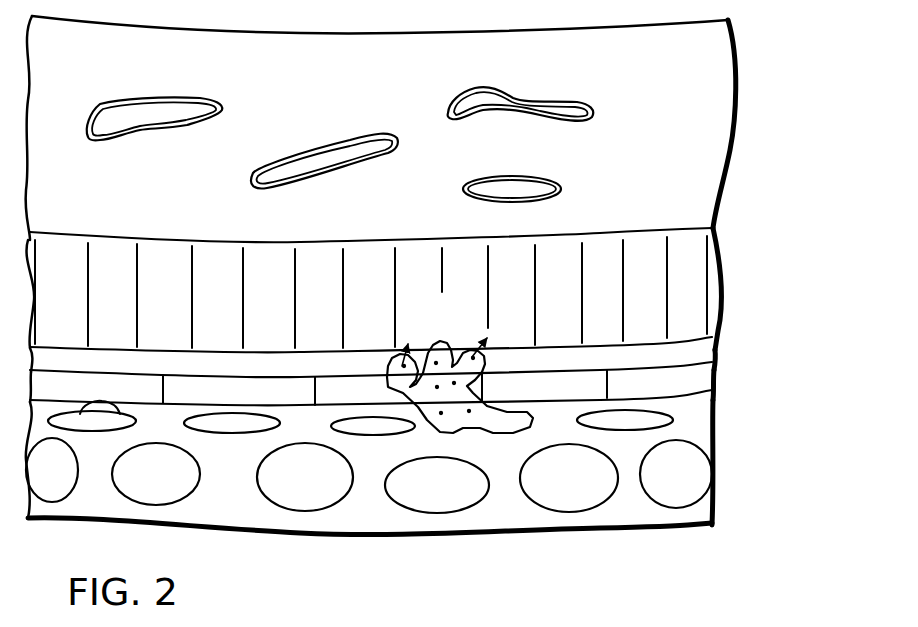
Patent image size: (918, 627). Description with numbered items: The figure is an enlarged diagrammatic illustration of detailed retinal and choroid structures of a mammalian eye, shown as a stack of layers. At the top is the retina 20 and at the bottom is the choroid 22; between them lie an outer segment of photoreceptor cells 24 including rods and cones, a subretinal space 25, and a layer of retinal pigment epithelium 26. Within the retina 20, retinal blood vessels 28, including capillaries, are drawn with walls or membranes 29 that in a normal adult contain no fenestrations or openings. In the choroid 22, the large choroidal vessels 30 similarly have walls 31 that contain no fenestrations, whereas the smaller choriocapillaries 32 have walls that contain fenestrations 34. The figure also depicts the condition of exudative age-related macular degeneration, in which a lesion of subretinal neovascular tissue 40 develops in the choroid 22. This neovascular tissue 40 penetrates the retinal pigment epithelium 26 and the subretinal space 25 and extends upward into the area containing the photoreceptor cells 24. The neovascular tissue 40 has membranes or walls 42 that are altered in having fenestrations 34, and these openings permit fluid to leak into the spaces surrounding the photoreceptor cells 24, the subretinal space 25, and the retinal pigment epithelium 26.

The retina 20 is at (738, 20).
The choroid 22 is at (723, 400).
The outer segment of photoreceptor cells 24 is at (725, 227).
The subretinal space 25 is at (727, 337).
The retinal pigment epithelium 26 is at (725, 368).
The retinal blood vessels 28 is at (157, 97).
The walls or membranes 29 is at (203, 100).
The large choroidal vessels 30 is at (112, 494).
The walls 31 is at (258, 482).
The choriocapillaries 32 is at (83, 433).
The fenestrations 34 is at (117, 412).
The subretinal neovascular tissue 40 is at (458, 435).
The membranes or walls 42 is at (425, 352).